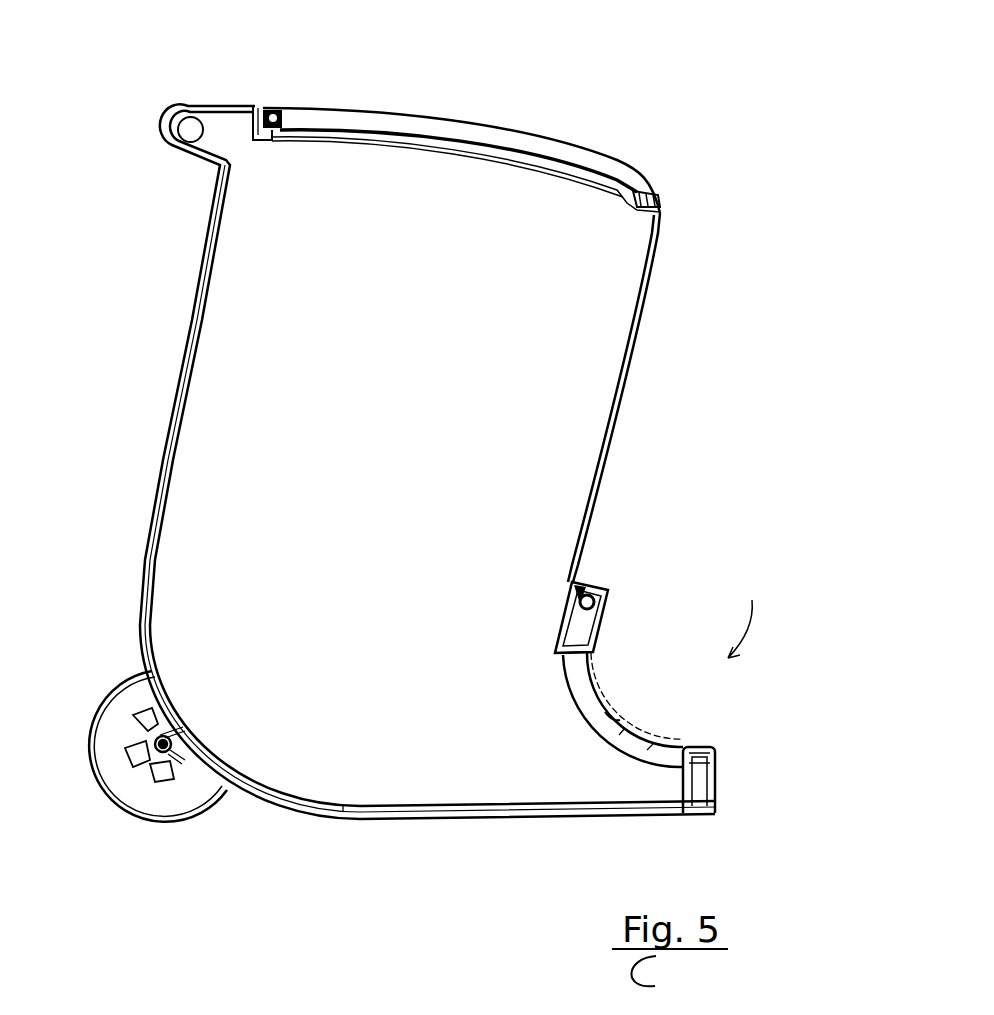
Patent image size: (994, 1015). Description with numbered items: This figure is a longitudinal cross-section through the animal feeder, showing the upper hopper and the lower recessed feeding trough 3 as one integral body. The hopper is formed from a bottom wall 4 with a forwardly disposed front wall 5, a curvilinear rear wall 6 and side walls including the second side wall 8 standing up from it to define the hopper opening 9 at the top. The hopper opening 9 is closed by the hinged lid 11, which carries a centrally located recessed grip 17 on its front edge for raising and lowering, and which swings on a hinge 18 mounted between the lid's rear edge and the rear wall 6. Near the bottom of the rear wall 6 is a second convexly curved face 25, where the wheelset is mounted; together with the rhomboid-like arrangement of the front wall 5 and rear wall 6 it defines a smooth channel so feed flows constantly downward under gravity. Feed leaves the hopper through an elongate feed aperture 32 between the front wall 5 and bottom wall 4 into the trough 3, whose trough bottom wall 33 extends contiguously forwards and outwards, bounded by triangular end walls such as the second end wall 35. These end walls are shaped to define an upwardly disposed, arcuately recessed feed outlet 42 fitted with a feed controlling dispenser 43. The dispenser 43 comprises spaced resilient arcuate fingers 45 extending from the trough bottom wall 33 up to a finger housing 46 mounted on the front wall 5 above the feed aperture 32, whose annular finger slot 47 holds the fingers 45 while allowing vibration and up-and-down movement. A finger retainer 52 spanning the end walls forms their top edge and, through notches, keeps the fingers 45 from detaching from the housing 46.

The feeding trough 3 is at (700, 746).
The bottom wall 4 is at (465, 810).
The front wall 5 is at (622, 402).
The rear wall 6 is at (185, 366).
The second side wall 8 is at (231, 323).
The hopper opening 9 is at (312, 124).
The hinged lid 11 is at (537, 130).
The recessed grip 17 is at (661, 198).
The hinge 18 is at (259, 103).
The convexly curved face 25 is at (240, 783).
The feed aperture 32 is at (540, 712).
The trough bottom wall 33 is at (637, 816).
The second end wall 35 is at (650, 747).
The feed outlet 42 is at (622, 730).
The feed controlling dispenser 43 is at (765, 610).
The arcuate finger 45 is at (606, 712).
The finger housing 46 is at (598, 592).
The annular finger slot 47 is at (602, 632).
The finger retainer 52 is at (597, 650).